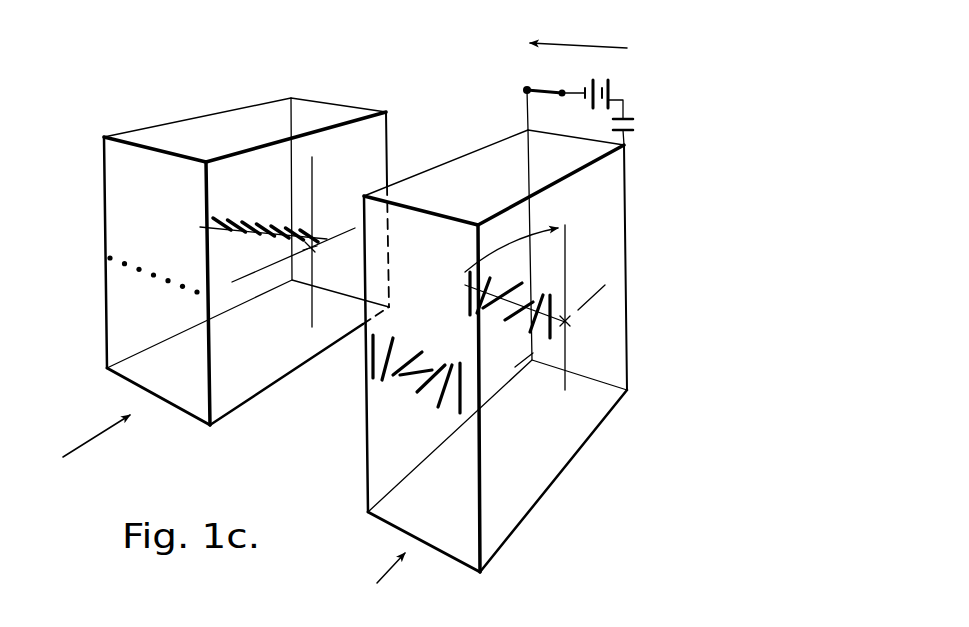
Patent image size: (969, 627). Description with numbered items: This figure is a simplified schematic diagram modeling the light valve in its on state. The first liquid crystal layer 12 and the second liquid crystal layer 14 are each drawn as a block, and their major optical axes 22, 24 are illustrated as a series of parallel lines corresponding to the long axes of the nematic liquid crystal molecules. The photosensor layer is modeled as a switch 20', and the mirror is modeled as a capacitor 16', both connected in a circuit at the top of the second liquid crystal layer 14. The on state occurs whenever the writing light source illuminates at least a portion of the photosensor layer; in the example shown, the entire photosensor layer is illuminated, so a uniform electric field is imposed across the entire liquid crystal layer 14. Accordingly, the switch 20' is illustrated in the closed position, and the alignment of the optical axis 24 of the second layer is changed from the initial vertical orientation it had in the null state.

The first liquid crystal layer 12 is at (323, 107).
The second liquid crystal layer 14 is at (482, 152).
The major optical axis 22 is at (240, 212).
The major optical axis 24 is at (500, 288).
The switch 20' is at (532, 90).
The capacitor 16' is at (627, 112).